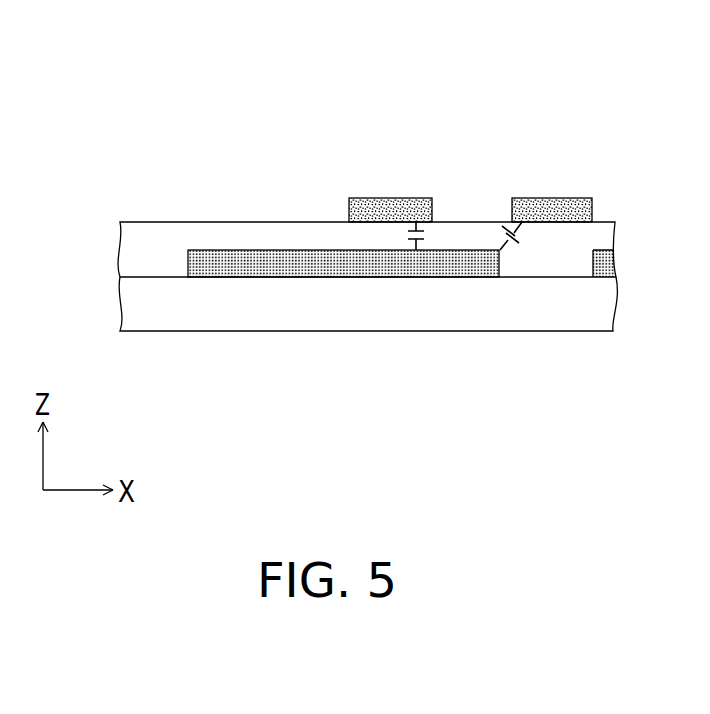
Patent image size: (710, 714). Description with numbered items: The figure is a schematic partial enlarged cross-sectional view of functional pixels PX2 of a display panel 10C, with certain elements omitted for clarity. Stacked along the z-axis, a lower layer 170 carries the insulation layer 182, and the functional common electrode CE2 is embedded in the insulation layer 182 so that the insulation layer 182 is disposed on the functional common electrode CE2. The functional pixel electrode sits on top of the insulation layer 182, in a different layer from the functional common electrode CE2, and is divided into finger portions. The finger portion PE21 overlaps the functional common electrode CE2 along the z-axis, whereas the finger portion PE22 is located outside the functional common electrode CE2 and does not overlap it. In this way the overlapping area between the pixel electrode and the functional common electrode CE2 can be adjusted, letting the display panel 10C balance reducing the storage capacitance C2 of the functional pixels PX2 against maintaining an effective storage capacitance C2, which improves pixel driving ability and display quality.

The substrate 170 is at (135, 317).
The insulation layer 182 is at (127, 240).
The functional common electrode CE2 is at (210, 257).
The finger portion PE21 is at (397, 198).
The finger portion PE22 is at (543, 198).
The storage capacitance C2 is at (427, 235).
The functional pixel PX2 is at (603, 158).
The display panel 10C is at (686, 507).